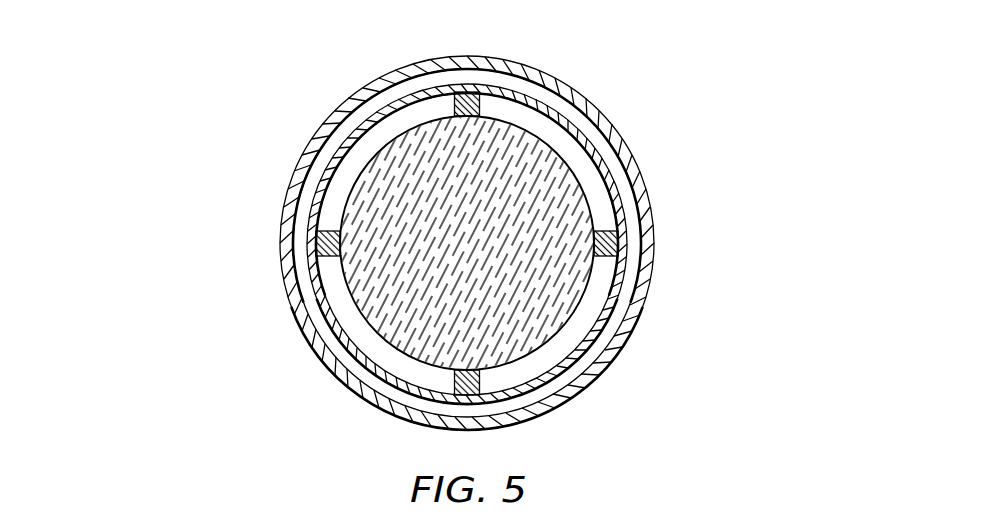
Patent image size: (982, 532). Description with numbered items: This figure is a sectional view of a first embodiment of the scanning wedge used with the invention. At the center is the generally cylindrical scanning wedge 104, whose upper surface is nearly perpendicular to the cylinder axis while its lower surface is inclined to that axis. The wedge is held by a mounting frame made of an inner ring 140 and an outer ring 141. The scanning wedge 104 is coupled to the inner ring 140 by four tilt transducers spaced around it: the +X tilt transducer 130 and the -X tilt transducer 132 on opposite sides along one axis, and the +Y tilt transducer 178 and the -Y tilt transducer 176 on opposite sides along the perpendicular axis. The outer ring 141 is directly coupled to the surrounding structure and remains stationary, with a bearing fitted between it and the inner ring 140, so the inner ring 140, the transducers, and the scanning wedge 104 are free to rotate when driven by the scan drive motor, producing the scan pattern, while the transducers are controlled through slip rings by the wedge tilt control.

The -Y tilt transducer 176 is at (495, 29).
The scanning wedge 104 is at (558, 165).
The +X tilt transducer 130 is at (318, 240).
The -X tilt transducer 132 is at (612, 245).
The outer ring 141 is at (305, 328).
The inner ring 140 is at (417, 393).
The +Y tilt transducer 178 is at (480, 394).